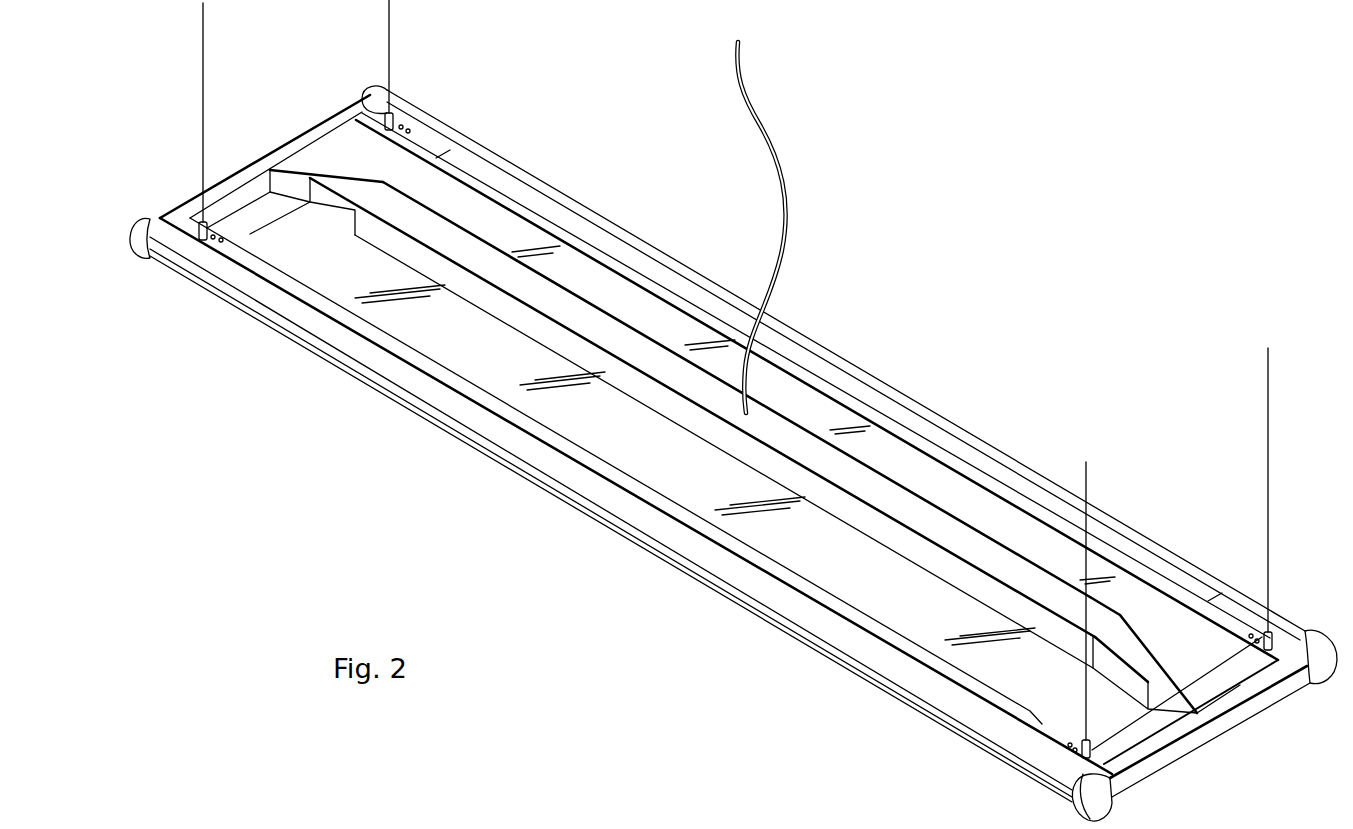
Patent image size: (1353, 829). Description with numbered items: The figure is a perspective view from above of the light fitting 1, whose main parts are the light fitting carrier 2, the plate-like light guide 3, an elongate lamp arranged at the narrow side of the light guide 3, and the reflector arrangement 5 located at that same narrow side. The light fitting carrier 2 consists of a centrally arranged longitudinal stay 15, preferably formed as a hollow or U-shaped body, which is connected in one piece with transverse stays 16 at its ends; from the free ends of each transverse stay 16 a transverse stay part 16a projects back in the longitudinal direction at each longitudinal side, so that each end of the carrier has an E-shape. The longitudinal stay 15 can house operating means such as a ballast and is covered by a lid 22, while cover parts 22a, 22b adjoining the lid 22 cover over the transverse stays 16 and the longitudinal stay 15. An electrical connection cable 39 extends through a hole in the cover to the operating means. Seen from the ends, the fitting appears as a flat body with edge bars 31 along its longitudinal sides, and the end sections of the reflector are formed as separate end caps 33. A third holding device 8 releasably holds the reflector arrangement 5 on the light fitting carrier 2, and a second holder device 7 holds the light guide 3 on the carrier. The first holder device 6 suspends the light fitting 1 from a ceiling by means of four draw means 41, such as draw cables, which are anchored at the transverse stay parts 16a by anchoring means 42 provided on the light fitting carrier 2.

The light fitting 1 is at (455, 456).
The light fitting carrier 2 is at (377, 198).
The light guide 3 is at (603, 440).
The reflector arrangement 5 is at (882, 374).
The first holder device 6 is at (204, 18).
The cable fastening 7 is at (1094, 748).
The third holding device 8 is at (1117, 808).
The longitudinal stay 15 is at (933, 497).
The transverse stay 16 is at (254, 171).
The transverse stay part 16a is at (372, 114).
The lid 22 is at (863, 478).
The cover part 22a is at (1131, 643).
The cover part 22b is at (1250, 692).
The edge bar 31 is at (138, 222).
The end cap 33 is at (109, 207).
The electrical connection cable 39 is at (782, 150).
The draw means 41 is at (613, 371).
The anchoring means 42 is at (188, 218).